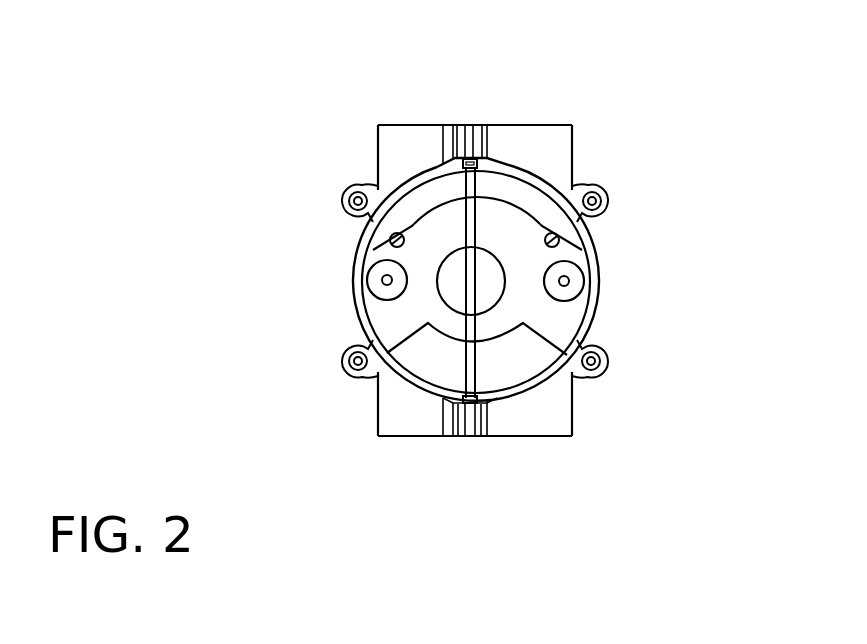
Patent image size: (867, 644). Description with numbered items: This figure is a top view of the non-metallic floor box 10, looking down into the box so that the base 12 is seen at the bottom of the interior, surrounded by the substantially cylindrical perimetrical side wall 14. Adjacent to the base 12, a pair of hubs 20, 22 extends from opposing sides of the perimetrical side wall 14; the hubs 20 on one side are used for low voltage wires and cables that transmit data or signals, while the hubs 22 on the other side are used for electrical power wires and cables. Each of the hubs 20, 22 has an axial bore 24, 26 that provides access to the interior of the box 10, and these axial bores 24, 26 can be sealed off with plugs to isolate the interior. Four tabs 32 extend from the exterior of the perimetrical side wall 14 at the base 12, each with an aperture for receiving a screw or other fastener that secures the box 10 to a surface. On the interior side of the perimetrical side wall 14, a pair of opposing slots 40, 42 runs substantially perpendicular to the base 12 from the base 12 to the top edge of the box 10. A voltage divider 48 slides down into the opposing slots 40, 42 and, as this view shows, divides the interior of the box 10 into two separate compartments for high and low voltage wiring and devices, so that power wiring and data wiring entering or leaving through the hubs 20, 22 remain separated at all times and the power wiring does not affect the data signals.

The non-metallic floor box 10 is at (258, 332).
The base 12 is at (380, 245).
The perimetrical side wall 14 is at (356, 273).
The hub 20 is at (378, 143).
The hub 22 is at (572, 145).
The axial bore 24 is at (417, 125).
The axial bore 26 is at (517, 125).
The tab 32 is at (352, 190).
The slot 40 is at (465, 437).
The slot 42 is at (471, 125).
The voltage divider 48 is at (473, 336).